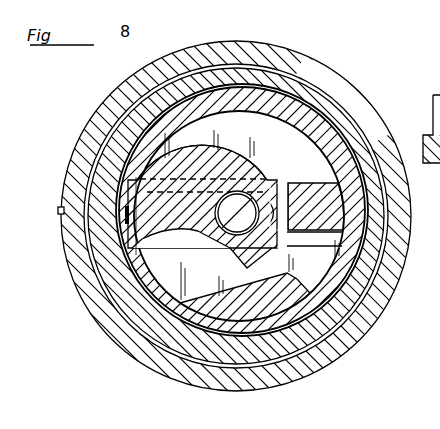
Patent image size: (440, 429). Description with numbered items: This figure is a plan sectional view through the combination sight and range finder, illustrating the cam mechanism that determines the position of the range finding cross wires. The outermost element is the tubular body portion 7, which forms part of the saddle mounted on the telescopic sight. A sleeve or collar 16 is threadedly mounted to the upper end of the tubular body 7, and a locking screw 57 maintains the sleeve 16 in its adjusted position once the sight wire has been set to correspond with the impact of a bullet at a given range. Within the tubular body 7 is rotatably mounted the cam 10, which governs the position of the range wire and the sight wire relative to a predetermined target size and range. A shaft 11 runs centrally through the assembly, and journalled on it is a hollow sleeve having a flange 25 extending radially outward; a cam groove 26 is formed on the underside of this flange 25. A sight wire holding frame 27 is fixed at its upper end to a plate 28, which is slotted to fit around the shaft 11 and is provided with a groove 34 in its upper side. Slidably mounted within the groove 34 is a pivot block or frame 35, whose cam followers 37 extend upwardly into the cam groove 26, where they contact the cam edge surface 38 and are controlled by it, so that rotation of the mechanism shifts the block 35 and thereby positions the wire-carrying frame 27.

The sleeve or collar 16 is at (110, 107).
The tubular body portion 7 is at (122, 133).
The cam 10 is at (128, 154).
The flange 25 is at (288, 137).
The cam followers 37 is at (318, 182).
The locking screw 57 is at (58, 211).
The cam groove 26 is at (243, 172).
The cam edge surface 38 is at (210, 145).
The shaft 11 is at (228, 243).
The plate 28 is at (183, 280).
The groove 34 is at (297, 249).
The pivot block or frame 35 is at (127, 284).
The sight wire holding frame 27 is at (439, 231).